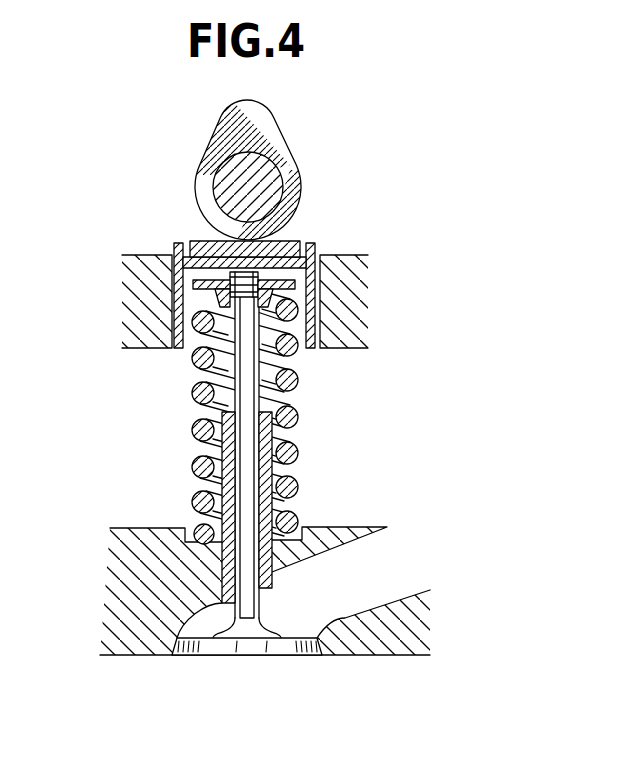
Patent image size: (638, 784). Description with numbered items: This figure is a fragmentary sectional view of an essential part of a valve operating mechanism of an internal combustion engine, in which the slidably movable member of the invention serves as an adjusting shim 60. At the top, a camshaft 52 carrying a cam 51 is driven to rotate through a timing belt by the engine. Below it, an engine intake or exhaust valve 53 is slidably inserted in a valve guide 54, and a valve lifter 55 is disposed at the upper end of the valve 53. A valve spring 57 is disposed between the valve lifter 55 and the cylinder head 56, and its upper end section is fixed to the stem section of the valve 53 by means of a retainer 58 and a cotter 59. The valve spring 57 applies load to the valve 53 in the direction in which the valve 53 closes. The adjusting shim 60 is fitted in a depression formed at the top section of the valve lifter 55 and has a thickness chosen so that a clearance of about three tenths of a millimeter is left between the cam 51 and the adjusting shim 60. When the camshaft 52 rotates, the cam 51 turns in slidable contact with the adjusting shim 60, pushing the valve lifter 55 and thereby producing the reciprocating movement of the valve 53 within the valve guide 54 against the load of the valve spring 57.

The cam 51 is at (265, 130).
The camshaft 52 is at (240, 188).
The valve 53 is at (250, 655).
The valve guide 54 is at (228, 452).
The valve lifter 55 is at (318, 250).
The cylinder head 56 is at (357, 533).
The valve spring 57 is at (298, 418).
The retainer 58 is at (258, 281).
The cotter 59 is at (212, 301).
The adjusting shim 60 is at (298, 241).